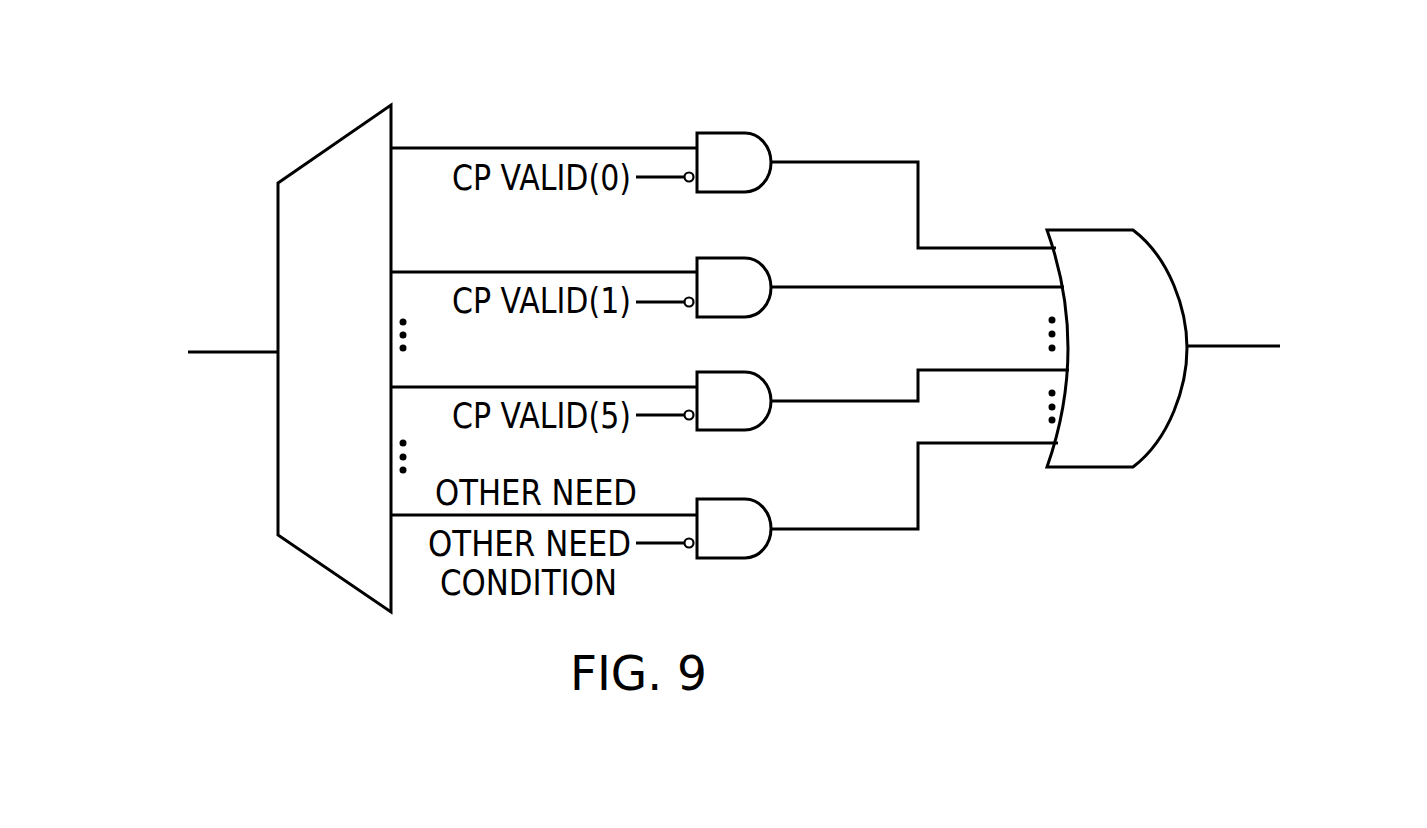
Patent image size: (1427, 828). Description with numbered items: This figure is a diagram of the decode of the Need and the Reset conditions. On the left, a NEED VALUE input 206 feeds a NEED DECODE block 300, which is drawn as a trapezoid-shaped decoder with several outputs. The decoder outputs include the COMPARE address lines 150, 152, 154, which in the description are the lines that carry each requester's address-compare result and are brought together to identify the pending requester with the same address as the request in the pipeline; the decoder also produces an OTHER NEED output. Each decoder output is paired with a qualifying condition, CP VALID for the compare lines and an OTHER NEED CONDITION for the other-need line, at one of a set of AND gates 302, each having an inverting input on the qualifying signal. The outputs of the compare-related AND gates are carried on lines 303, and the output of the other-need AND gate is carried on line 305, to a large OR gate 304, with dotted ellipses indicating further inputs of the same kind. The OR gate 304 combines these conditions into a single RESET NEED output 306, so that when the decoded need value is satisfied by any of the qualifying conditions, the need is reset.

The COMPARE address line 150 is at (660, 148).
The COMPARE address line 152 is at (668, 272).
The COMPARE address line 154 is at (668, 387).
The need value 206 is at (236, 354).
The need decode 300 is at (318, 566).
The AND gate 302 is at (740, 192).
The AND gate output line 303 is at (970, 248).
The OR gate 304 is at (1082, 467).
The other need output line 305 is at (963, 445).
The reset need output 306 is at (1228, 348).